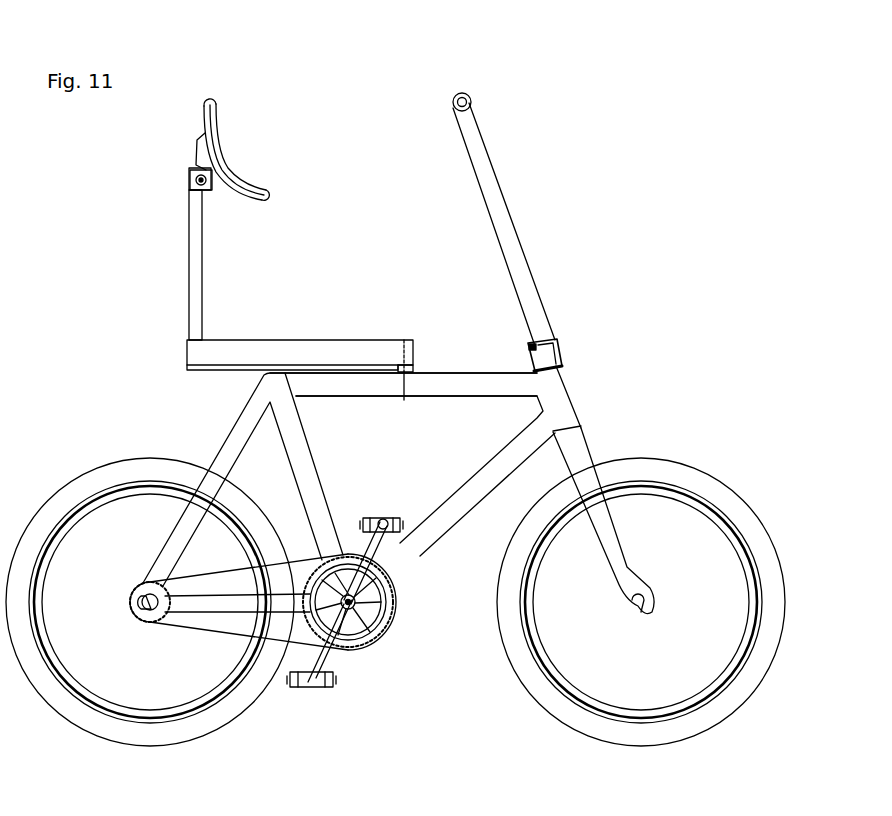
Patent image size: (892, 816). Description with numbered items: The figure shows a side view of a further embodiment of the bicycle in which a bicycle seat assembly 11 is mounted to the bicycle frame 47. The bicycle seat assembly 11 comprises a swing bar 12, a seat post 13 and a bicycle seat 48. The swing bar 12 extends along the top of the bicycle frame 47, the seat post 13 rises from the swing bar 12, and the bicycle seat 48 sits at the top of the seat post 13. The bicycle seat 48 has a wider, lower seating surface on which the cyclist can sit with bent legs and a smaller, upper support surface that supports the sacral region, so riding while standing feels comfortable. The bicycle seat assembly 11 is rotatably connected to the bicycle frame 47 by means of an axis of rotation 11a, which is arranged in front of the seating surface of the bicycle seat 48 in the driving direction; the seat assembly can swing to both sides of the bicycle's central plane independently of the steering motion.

The bicycle seat assembly 11 is at (248, 235).
The axis of rotation 11a is at (405, 350).
The swing bar 12 is at (223, 353).
The seat post 13 is at (197, 272).
The bicycle frame 47 is at (473, 382).
The bicycle seat 48 is at (203, 155).